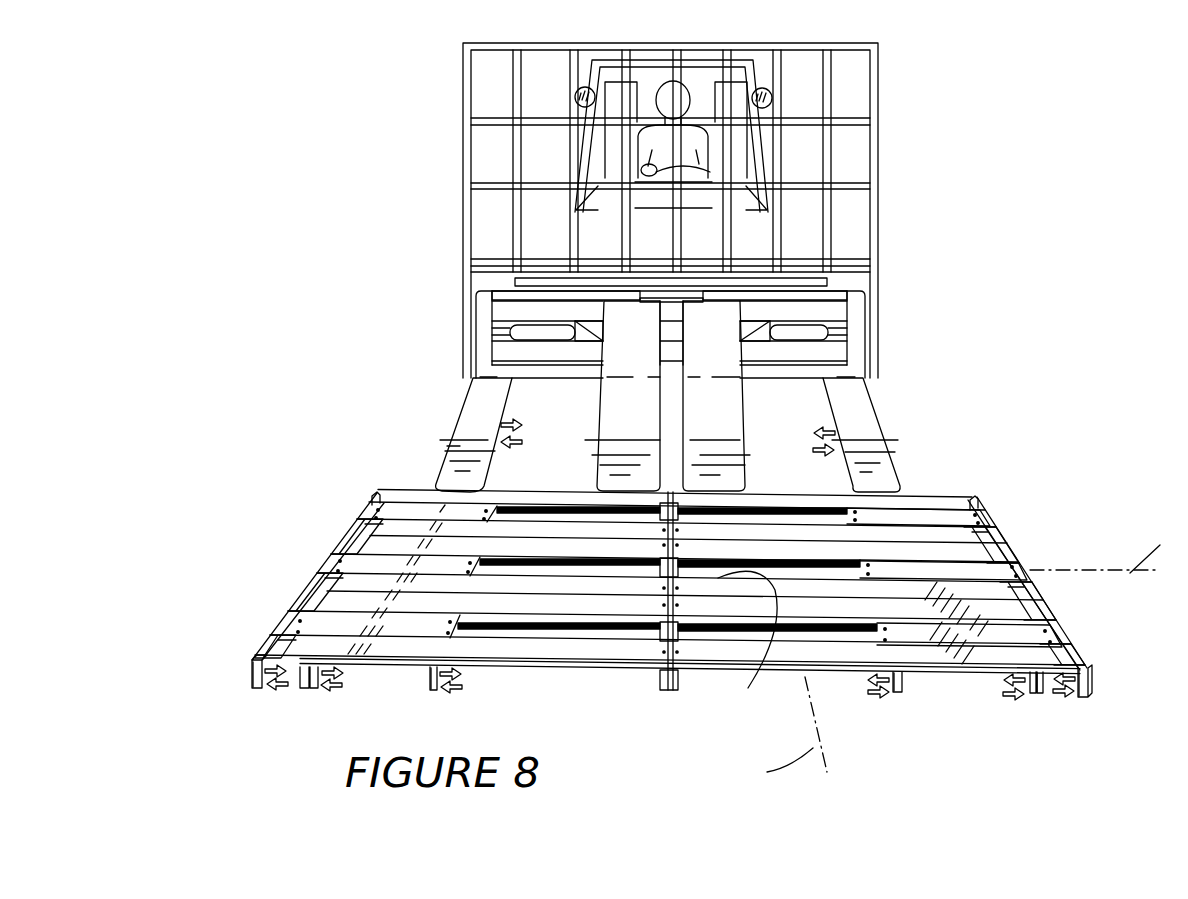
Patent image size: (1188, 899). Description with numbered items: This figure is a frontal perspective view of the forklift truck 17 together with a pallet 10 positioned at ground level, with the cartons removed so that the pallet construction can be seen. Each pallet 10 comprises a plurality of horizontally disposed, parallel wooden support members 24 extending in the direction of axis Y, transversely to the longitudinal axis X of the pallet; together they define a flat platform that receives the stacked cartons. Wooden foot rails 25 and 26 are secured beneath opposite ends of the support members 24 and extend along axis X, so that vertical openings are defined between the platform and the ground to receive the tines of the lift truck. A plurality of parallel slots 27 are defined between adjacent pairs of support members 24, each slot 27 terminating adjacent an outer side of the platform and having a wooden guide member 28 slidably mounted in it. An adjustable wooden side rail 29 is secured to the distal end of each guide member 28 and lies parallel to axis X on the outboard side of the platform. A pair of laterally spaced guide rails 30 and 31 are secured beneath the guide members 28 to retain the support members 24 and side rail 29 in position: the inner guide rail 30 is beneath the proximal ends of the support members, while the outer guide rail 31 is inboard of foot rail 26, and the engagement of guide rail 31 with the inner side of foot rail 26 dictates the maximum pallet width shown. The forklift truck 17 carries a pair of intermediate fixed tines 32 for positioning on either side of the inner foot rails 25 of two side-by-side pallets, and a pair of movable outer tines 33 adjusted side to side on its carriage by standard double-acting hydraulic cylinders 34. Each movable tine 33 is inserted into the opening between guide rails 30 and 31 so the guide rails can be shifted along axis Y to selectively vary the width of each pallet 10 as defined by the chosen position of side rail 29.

The pallet 10 is at (335, 520).
The forklift truck 17 is at (910, 112).
The support members 24 is at (917, 537).
The inner foot rail 25 is at (666, 690).
The outer foot rail 26 is at (1043, 687).
The slots 27 is at (776, 652).
The guide member 28 is at (1045, 640).
The adjustable side rail 29 is at (255, 672).
The inner guide rail 30 is at (898, 693).
The outer guide rail 31 is at (1034, 695).
The intermediate fixed tines 32 is at (632, 417).
The movable outer tines 33 is at (470, 412).
The double-acting hydraulic cylinders 34 is at (553, 330).